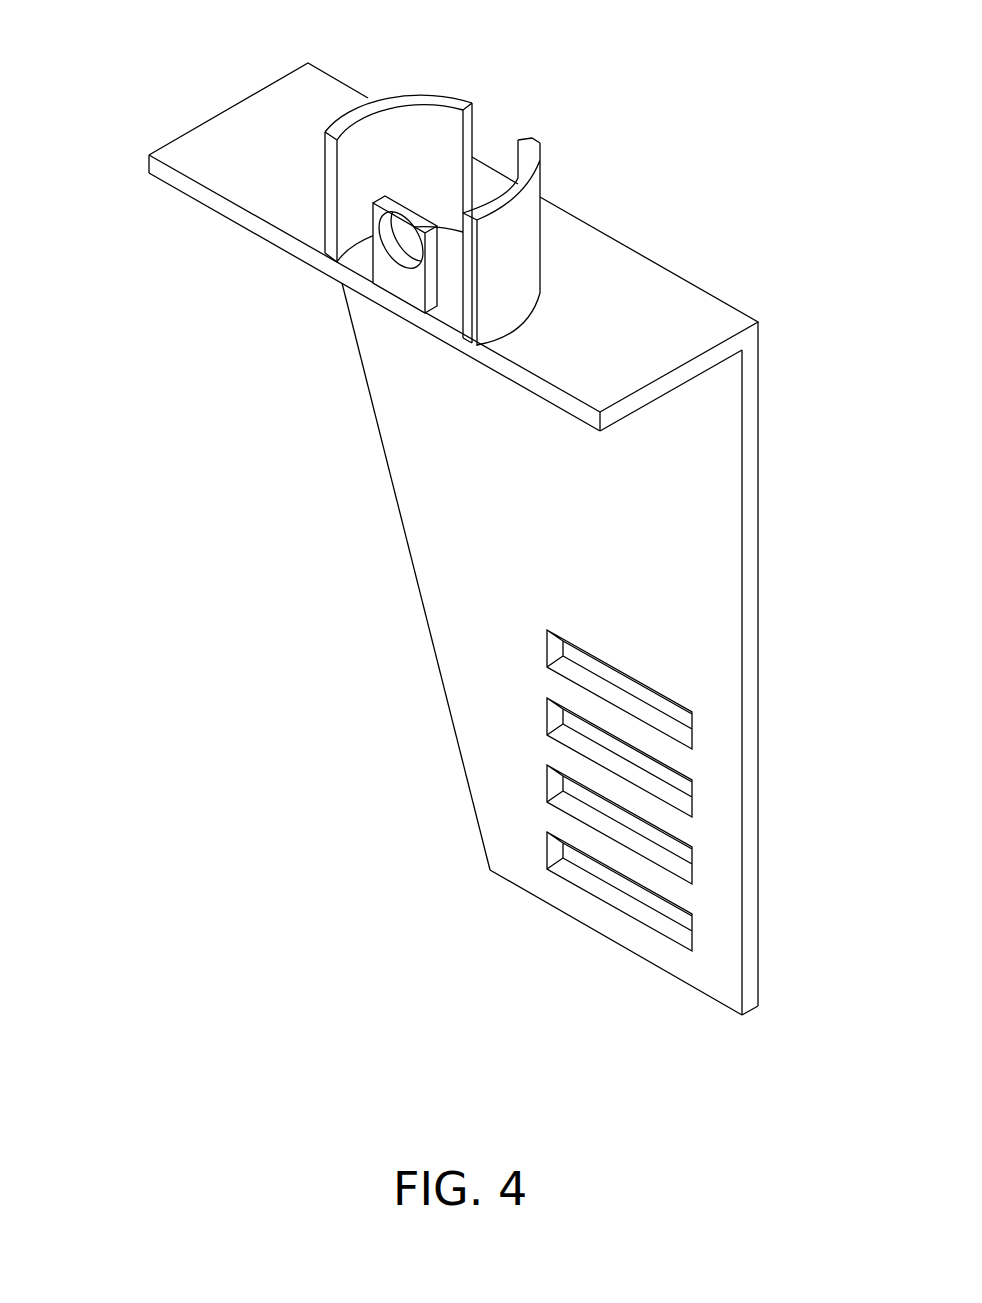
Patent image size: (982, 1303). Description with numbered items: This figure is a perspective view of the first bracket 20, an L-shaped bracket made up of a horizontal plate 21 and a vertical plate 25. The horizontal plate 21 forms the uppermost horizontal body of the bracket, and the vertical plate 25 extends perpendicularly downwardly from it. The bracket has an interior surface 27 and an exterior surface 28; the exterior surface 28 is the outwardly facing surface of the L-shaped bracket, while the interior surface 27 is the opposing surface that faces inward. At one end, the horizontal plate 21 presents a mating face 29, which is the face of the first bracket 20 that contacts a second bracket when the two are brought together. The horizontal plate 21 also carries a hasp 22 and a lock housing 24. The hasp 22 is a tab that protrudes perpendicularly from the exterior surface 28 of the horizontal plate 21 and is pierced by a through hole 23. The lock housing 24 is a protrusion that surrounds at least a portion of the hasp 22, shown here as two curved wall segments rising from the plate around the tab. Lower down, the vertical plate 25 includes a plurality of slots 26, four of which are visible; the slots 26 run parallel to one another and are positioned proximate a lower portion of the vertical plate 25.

The first bracket 20 is at (463, 509).
The horizontal plate 21 is at (277, 100).
The hasp 22 is at (393, 285).
The through hole 23 is at (391, 243).
The lock housing 24 is at (418, 98).
The vertical plate 25 is at (720, 572).
The slots 26 is at (685, 716).
The interior surface 27 is at (456, 593).
The exterior surface 28 is at (681, 301).
The mating face 29 is at (156, 167).